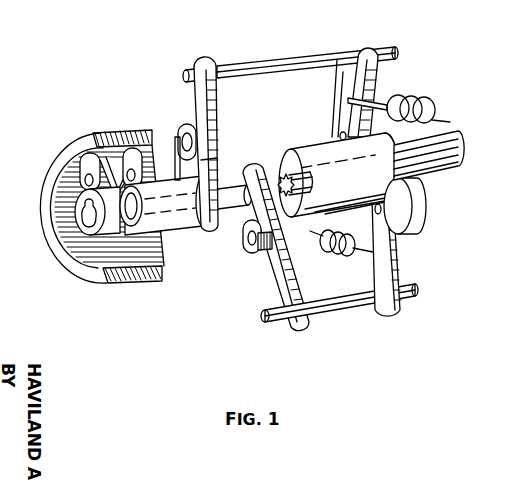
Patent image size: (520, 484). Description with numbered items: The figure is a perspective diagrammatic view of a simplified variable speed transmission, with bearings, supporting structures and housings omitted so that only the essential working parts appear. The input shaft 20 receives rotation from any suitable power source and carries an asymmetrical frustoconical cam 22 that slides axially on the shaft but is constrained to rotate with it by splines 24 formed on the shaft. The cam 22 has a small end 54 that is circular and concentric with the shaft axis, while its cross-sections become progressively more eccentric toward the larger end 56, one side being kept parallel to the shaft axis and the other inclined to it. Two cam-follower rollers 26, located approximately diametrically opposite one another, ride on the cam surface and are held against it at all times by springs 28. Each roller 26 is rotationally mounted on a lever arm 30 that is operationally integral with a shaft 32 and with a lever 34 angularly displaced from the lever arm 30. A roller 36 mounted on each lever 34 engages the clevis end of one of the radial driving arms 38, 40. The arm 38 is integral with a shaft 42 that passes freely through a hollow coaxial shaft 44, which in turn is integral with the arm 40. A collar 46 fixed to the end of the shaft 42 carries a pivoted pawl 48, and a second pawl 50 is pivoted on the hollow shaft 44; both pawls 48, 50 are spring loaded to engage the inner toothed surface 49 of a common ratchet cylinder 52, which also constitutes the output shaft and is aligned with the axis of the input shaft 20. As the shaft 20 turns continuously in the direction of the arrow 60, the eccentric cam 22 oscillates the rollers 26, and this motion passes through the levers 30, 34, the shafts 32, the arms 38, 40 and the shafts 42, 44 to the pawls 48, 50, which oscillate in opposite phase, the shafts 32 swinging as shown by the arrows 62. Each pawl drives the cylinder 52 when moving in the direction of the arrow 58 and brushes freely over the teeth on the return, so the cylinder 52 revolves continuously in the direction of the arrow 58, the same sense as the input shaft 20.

The input shaft 20 is at (455, 160).
The asymmetrical frustoconical cam 22 is at (322, 133).
The splines 24 is at (437, 168).
The rollers 26 is at (365, 122).
The springs 28 is at (425, 99).
The lever arms 30 is at (340, 83).
The shafts 32 is at (338, 52).
The levers 34 is at (216, 78).
The rollers 36 is at (188, 128).
The radial driving arm 38 is at (248, 248).
The radial driving arm 40 is at (216, 163).
The shaft 42 is at (231, 212).
The hollow coaxial shaft 44 is at (170, 228).
The collar 46 is at (87, 236).
The pawl 48 is at (72, 180).
The inner toothed surface 49 is at (80, 160).
The second pawl 50 is at (141, 161).
The ratchet cylinder 52 is at (43, 212).
The small end 54 is at (295, 160).
The larger end 56 is at (393, 140).
The arrow 58 is at (65, 118).
The arrow 60 is at (454, 126).
The arrows 62 is at (250, 55).